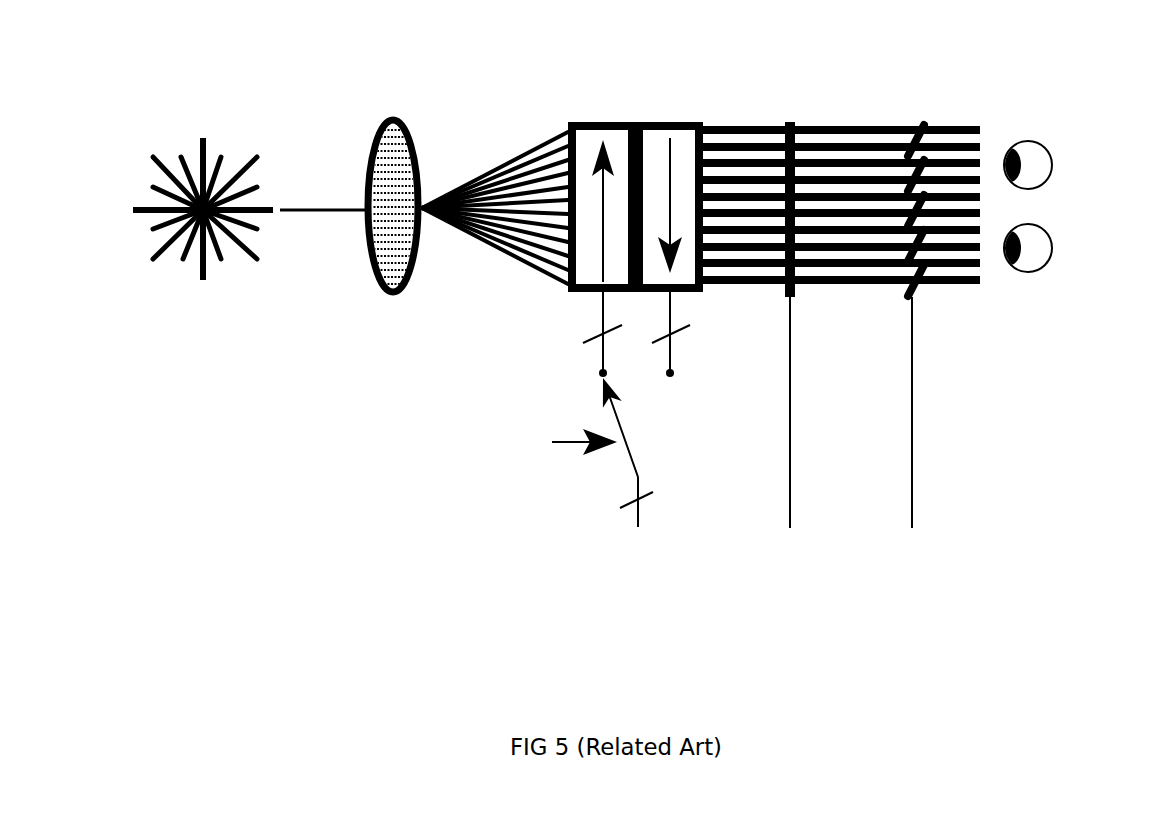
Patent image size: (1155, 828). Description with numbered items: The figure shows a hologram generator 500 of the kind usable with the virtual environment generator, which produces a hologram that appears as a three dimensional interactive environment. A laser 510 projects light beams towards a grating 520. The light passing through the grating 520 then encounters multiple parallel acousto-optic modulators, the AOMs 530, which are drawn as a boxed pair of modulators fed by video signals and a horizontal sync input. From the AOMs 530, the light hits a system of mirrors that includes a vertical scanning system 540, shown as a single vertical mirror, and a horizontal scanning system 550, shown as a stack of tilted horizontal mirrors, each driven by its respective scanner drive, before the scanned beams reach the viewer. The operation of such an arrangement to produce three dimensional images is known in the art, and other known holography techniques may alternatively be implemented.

The related art laser display system 500 is at (643, 299).
The laser 510 is at (203, 211).
The grating 520 is at (381, 211).
The acousto-optic modulators (AOMs) 530 is at (573, 299).
The vertical scanning system 540 is at (781, 299).
The horizontal scanning system 550 is at (923, 299).